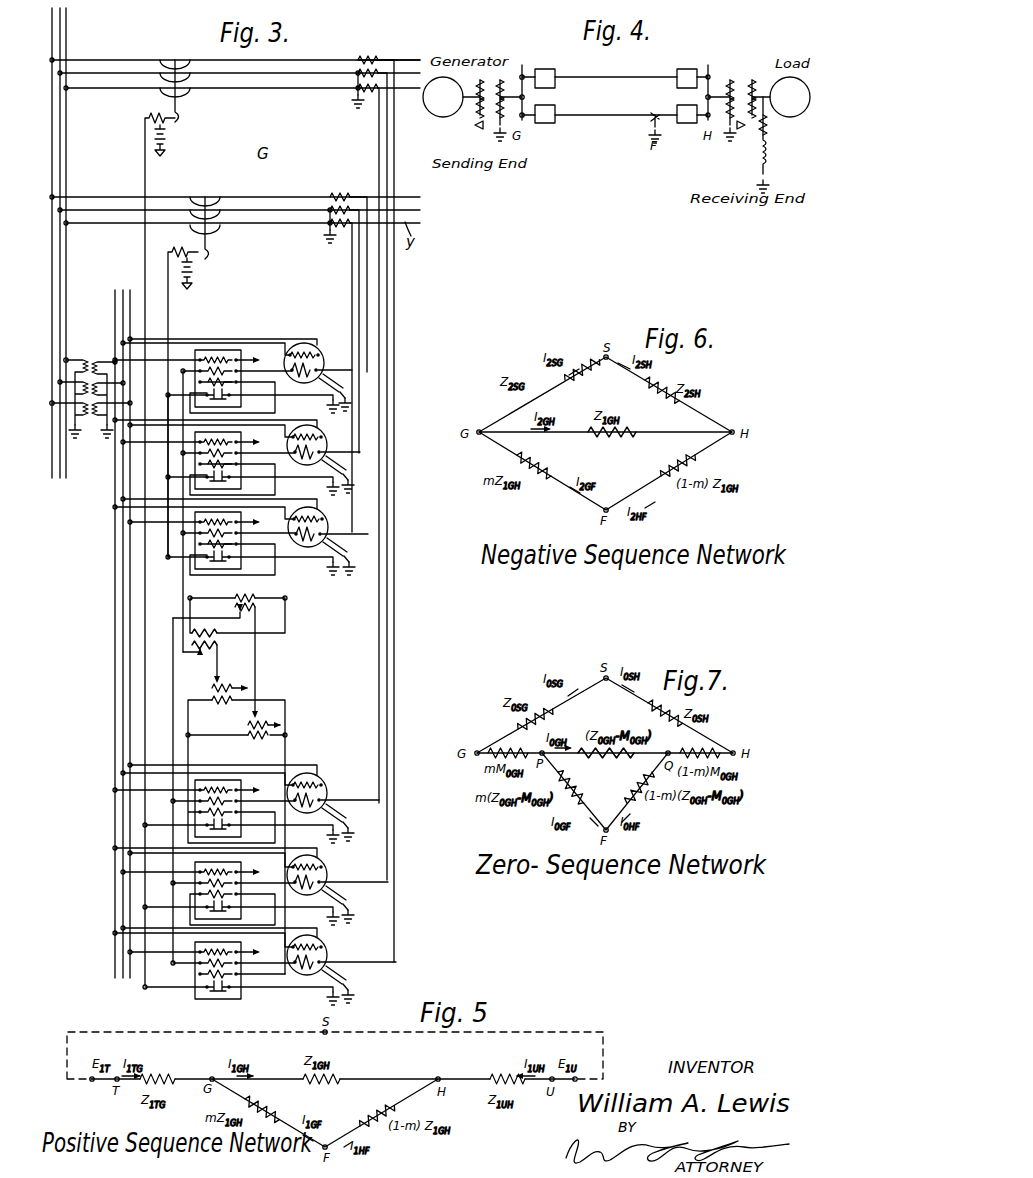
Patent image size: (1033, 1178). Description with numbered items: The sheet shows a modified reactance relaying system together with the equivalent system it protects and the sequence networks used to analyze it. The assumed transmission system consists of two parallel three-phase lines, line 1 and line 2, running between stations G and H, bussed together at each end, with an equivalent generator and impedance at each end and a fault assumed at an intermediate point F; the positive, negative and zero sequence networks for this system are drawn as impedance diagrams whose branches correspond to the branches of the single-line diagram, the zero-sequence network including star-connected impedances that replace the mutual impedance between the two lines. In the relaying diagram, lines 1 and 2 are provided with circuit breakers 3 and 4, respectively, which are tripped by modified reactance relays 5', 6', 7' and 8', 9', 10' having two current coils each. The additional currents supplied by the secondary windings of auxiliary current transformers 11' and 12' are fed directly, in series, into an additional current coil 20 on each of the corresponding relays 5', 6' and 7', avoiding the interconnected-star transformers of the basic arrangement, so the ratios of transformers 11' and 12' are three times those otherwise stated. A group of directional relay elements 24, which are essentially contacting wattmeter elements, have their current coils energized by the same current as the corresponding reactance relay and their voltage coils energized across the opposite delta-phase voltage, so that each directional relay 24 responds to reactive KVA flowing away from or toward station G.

In FIG. 4, the line 1 is at (600, 115).
In FIG. 3, the line 2 is at (407, 58).
In FIG. 4, the line 2 is at (620, 78).
In FIG. 3, the circuit breaker 3 is at (214, 233).
In FIG. 4, the circuit breaker 3 is at (555, 122).
In FIG. 3, the circuit breaker 4 is at (180, 97).
In FIG. 4, the circuit breaker 4 is at (555, 70).
In FIG. 3, the reactance relay 5' is at (234, 547).
In FIG. 3, the reactance relay 6' is at (231, 464).
In FIG. 3, the reactance relay 7' is at (227, 382).
In FIG. 3, the reactance relay 8' is at (234, 974).
In FIG. 3, the reactance relay 9' is at (231, 893).
In FIG. 3, the reactance relay 10' is at (227, 789).
In FIG. 3, the auxiliary current transformer 11' is at (215, 666).
In FIG. 3, the auxiliary current transformer 12' is at (230, 607).
In FIG. 3, the additional current coil 20 is at (255, 553).
In FIG. 3, the directional relay element 24 is at (333, 941).